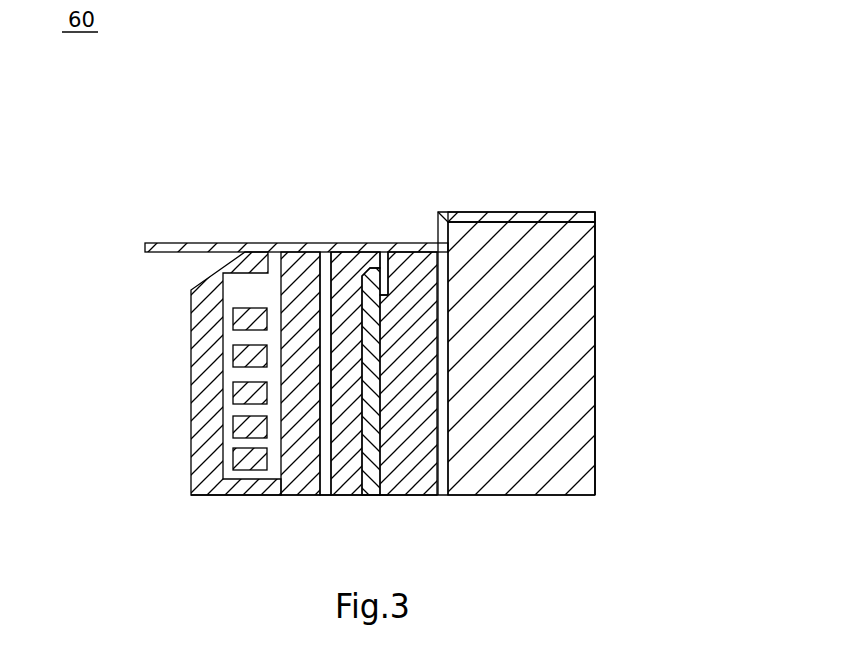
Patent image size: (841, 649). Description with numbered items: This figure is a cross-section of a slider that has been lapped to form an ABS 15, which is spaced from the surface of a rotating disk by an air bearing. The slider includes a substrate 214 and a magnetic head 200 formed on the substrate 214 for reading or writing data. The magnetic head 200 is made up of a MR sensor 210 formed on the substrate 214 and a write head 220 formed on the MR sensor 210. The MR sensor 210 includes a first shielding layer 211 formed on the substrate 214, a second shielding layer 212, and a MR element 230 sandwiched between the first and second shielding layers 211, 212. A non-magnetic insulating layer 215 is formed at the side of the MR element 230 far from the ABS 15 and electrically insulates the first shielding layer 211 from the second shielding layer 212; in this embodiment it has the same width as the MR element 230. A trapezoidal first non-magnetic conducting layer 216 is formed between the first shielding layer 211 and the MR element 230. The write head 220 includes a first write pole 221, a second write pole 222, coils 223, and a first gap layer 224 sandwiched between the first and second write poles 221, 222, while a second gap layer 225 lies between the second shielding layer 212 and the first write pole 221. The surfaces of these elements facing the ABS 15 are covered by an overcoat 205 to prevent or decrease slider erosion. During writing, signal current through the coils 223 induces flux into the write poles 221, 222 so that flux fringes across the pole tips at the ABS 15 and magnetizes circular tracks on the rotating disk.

The magnetic head 200 is at (380, 74).
The write head 220 is at (268, 127).
The MR sensor 210 is at (475, 123).
The second write pole 222 is at (232, 250).
The first gap layer 224 is at (265, 252).
The coils 223 is at (238, 453).
The first write pole 221 is at (297, 252).
The second gap layer 225 is at (321, 252).
The first shielding layer 211 is at (353, 260).
The first non-magnetic conducting layer 216 is at (375, 272).
The MR element 230 is at (381, 270).
The second shielding layer 212 is at (422, 258).
The overcoat 205 is at (485, 212).
The ABS 15 is at (548, 212).
The substrate 214 is at (578, 282).
The non-magnetic insulating layer 215 is at (383, 495).